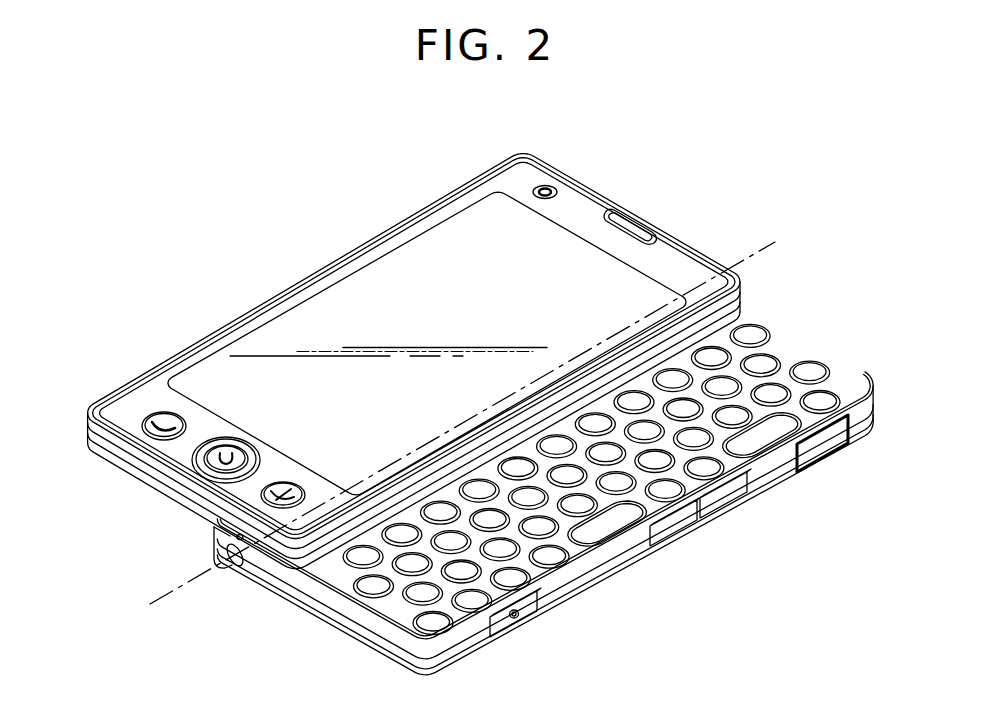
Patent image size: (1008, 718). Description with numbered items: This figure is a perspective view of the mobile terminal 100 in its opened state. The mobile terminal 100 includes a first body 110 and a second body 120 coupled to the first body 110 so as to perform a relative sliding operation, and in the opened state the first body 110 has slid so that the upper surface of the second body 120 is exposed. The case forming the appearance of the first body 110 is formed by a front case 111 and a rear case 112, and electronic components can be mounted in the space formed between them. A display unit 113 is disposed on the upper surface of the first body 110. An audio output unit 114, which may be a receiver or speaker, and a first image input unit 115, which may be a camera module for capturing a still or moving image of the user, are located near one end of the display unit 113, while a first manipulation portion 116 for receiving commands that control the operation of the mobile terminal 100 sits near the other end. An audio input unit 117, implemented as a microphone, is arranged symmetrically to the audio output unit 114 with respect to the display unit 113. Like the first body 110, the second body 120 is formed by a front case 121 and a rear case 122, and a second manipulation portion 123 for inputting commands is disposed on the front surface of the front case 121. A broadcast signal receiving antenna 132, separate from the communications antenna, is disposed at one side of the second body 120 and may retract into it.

The mobile terminal 100 is at (368, 214).
The first body 110 is at (118, 552).
The front case 111 is at (128, 463).
The rear case 112 is at (160, 490).
The display unit 113 is at (347, 280).
The audio output unit 114 is at (636, 222).
The first image input unit 115 is at (552, 187).
The first manipulation portion 116 is at (153, 413).
The audio input unit 117 is at (227, 540).
The second body 120 is at (607, 647).
The front case 121 is at (553, 590).
The rear case 122 is at (605, 573).
The second manipulation portion 123 is at (812, 370).
The broadcast signal receiving antenna 132 is at (230, 570).